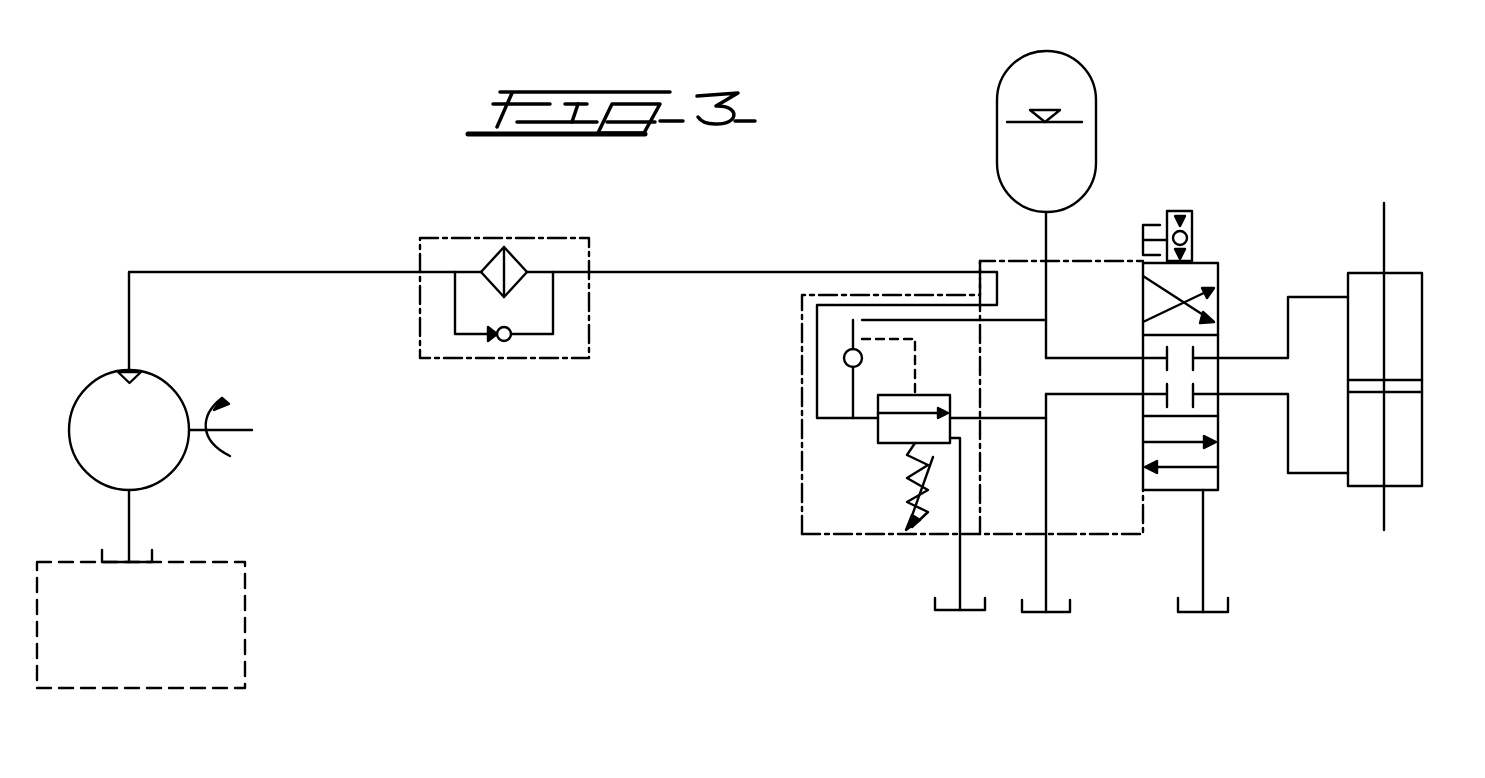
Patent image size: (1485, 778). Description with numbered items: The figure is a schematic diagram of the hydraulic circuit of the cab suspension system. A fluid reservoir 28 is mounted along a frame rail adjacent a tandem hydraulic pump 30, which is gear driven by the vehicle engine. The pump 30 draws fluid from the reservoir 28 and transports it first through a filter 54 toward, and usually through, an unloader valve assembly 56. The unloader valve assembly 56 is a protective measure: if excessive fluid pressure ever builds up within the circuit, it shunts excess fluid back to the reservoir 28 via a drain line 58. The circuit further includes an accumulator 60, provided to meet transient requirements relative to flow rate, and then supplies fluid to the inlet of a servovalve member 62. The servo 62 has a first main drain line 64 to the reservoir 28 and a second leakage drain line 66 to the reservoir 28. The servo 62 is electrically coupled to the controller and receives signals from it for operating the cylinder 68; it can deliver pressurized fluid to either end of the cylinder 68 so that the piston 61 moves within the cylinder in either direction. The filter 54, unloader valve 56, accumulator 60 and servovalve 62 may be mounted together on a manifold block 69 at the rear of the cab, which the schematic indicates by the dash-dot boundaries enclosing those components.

The fluid reservoir 28 is at (245, 645).
The tandem hydraulic pump 30 is at (183, 458).
The filter 54 is at (518, 262).
The unloader valve assembly 56 is at (838, 359).
The drain line 58 is at (960, 582).
The accumulator 60 is at (1096, 82).
The piston 61 is at (1403, 388).
The servovalve member 62 is at (1219, 482).
The first main drain line 64 is at (1048, 582).
The second leakage drain line 66 is at (1205, 550).
The cylinder 68 is at (1403, 488).
The manifold block 69 is at (493, 358).